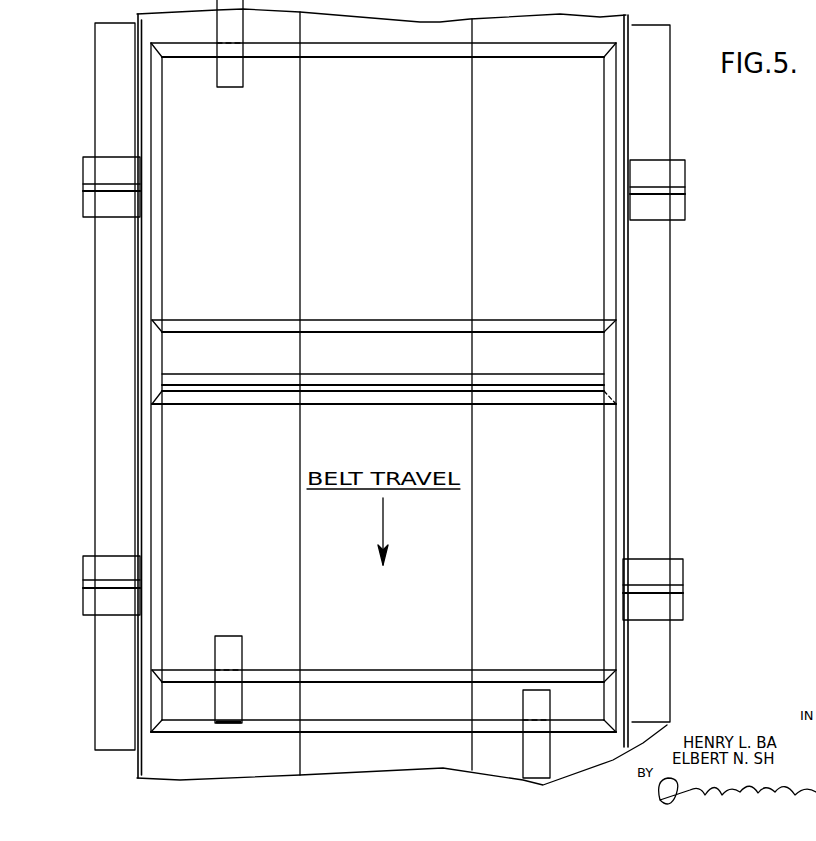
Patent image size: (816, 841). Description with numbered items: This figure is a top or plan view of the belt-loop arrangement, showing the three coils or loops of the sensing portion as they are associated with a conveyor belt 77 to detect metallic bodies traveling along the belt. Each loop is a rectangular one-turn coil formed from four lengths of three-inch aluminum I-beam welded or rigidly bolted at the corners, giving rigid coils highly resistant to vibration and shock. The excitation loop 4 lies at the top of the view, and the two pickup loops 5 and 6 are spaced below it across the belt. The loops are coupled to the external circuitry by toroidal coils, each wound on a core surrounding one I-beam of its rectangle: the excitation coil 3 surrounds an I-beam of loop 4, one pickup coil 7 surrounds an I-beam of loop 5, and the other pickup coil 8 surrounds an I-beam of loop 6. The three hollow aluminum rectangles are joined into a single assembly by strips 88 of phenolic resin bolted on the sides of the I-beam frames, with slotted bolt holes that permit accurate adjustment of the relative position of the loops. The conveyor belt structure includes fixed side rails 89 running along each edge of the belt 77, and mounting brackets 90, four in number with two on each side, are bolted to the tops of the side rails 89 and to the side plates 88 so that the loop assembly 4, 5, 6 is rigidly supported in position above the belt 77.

The excitation coil 3 is at (233, 73).
The excitation coil loop 4 is at (530, 50).
The pickup coil loop 5 is at (396, 318).
The pickup coil loop 6 is at (400, 733).
The pickup coil 7 is at (232, 638).
The pickup coil 8 is at (533, 767).
The conveyor belt 77 is at (200, 765).
The phenolic resin strips 88 is at (147, 280).
The side rails 89 is at (107, 426).
The mounting brackets 90 is at (88, 157).